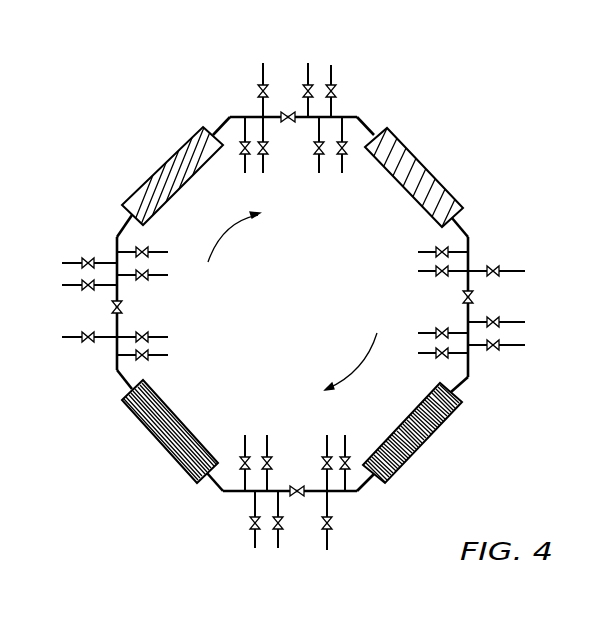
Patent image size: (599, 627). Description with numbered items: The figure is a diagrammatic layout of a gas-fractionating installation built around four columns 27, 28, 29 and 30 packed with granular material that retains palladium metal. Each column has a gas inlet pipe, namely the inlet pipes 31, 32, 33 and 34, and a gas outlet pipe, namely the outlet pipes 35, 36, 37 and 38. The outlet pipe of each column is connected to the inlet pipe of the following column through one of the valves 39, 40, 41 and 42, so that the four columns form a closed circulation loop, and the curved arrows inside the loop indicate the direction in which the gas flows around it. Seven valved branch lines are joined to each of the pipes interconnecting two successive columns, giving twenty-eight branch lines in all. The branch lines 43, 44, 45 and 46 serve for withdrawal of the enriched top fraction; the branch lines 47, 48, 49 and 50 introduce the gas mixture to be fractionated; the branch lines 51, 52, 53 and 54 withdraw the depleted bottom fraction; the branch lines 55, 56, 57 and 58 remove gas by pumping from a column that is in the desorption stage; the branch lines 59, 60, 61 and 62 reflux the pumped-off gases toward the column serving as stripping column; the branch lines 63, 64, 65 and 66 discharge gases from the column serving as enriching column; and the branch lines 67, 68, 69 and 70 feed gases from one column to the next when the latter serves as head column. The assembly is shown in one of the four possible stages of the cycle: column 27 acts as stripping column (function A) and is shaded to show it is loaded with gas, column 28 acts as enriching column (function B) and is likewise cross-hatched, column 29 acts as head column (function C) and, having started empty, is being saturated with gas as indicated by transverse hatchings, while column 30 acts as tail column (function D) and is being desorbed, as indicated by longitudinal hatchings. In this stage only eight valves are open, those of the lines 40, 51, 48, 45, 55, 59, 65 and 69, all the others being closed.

The column 27 is at (153, 177).
The column 28 is at (440, 193).
The column 29 is at (455, 425).
The column 30 is at (150, 432).
The gas inlet pipe 31 is at (122, 228).
The gas inlet pipe 32 is at (367, 127).
The gas inlet pipe 33 is at (462, 386).
The gas inlet pipe 34 is at (215, 484).
The gas outlet pipe 35 is at (221, 126).
The gas outlet pipe 36 is at (460, 226).
The gas outlet pipe 37 is at (367, 484).
The gas outlet pipe 38 is at (125, 380).
The valve 39 is at (122, 307).
The valve 40 is at (288, 121).
The valve 41 is at (465, 297).
The valve 42 is at (297, 487).
The branch line 43 is at (62, 337).
The branch line 44 is at (263, 68).
The branch line 45 is at (530, 268).
The branch line 46 is at (327, 550).
The branch line 47 is at (62, 285).
The branch line 48 is at (308, 68).
The branch line 49 is at (530, 315).
The branch line 50 is at (278, 548).
The branch line 51 is at (62, 263).
The branch line 52 is at (331, 70).
The branch line 53 is at (525, 345).
The branch line 54 is at (255, 548).
The branch line 55 is at (168, 337).
The branch line 56 is at (263, 170).
The branch line 57 is at (418, 271).
The branch line 58 is at (327, 437).
The branch line 59 is at (168, 275).
The branch line 60 is at (319, 170).
The branch line 61 is at (418, 333).
The branch line 62 is at (267, 437).
The branch line 63 is at (168, 355).
The branch line 64 is at (245, 170).
The branch line 65 is at (418, 252).
The branch line 66 is at (345, 437).
The branch line 67 is at (168, 252).
The branch line 68 is at (342, 170).
The branch line 69 is at (418, 353).
The branch line 70 is at (245, 437).
The stripping column function A is at (165, 153).
The enriching column function B is at (431, 160).
The head column function C is at (424, 452).
The tail column function D is at (162, 463).